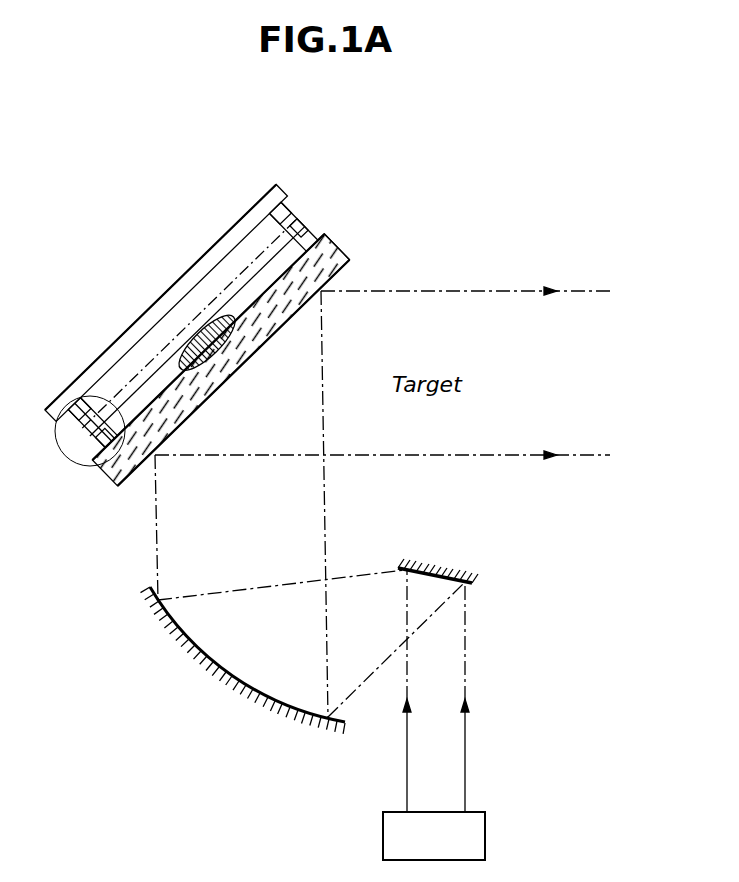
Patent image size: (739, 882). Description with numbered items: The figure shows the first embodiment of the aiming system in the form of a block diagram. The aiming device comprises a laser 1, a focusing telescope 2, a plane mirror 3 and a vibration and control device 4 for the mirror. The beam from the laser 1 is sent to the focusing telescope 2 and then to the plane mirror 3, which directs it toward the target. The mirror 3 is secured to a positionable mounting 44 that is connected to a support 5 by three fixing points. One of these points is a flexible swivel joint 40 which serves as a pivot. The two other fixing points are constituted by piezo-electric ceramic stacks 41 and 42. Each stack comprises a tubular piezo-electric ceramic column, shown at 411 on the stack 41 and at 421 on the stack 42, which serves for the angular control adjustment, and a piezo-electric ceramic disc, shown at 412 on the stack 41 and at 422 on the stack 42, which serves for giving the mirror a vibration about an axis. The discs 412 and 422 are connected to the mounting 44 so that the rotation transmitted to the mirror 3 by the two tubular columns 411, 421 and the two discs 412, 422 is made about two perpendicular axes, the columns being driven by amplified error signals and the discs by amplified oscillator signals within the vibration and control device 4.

The laser 1 is at (383, 834).
The focusing telescope 2 is at (232, 667).
The plane mirror 3 is at (245, 350).
The vibration and control device 4 is at (64, 447).
The support 5 is at (141, 330).
The flexible swivel joint 40 is at (203, 332).
The piezo-electric ceramic stack 41 is at (84, 453).
The piezo-electric ceramic stack 42 is at (322, 214).
The positionable mounting 44 is at (338, 248).
The tubular piezo-electric ceramic column 411 is at (73, 413).
The piezo-electric ceramic disc 412 is at (96, 460).
The tubular piezo-electric ceramic column 421 is at (300, 226).
The piezo-electric ceramic disc 422 is at (312, 232).